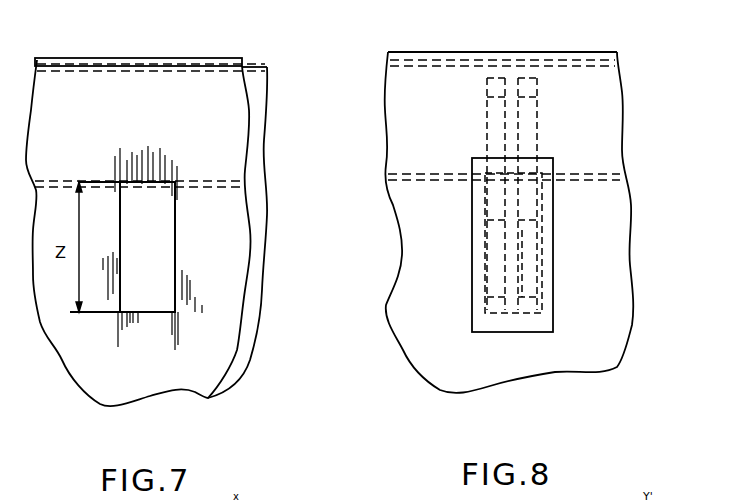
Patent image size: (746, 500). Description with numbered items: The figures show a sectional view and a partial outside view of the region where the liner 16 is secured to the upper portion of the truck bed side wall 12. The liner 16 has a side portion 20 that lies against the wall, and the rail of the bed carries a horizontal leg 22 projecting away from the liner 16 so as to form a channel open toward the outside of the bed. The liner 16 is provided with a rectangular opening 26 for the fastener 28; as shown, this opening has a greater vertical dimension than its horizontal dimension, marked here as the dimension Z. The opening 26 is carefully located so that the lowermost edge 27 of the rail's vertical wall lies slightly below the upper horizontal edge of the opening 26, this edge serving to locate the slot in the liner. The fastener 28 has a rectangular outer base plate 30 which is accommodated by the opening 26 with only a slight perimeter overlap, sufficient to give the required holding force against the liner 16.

In FIG. 7, the side wall 12 is at (265, 298).
In FIG. 7, the bed liner 16 is at (212, 58).
In FIG. 8, the bed liner 16 is at (510, 50).
In FIG. 7, the side portion 20 is at (223, 343).
In FIG. 8, the side portion 20 is at (603, 226).
In FIG. 7, the horizontal leg 22 is at (155, 197).
In FIG. 7, the opening 26 is at (150, 265).
In FIG. 7, the lowermost edge of vertical wall 27 is at (130, 186).
In FIG. 8, the fastener 28 is at (557, 277).
In FIG. 8, the base plate 30 is at (517, 323).